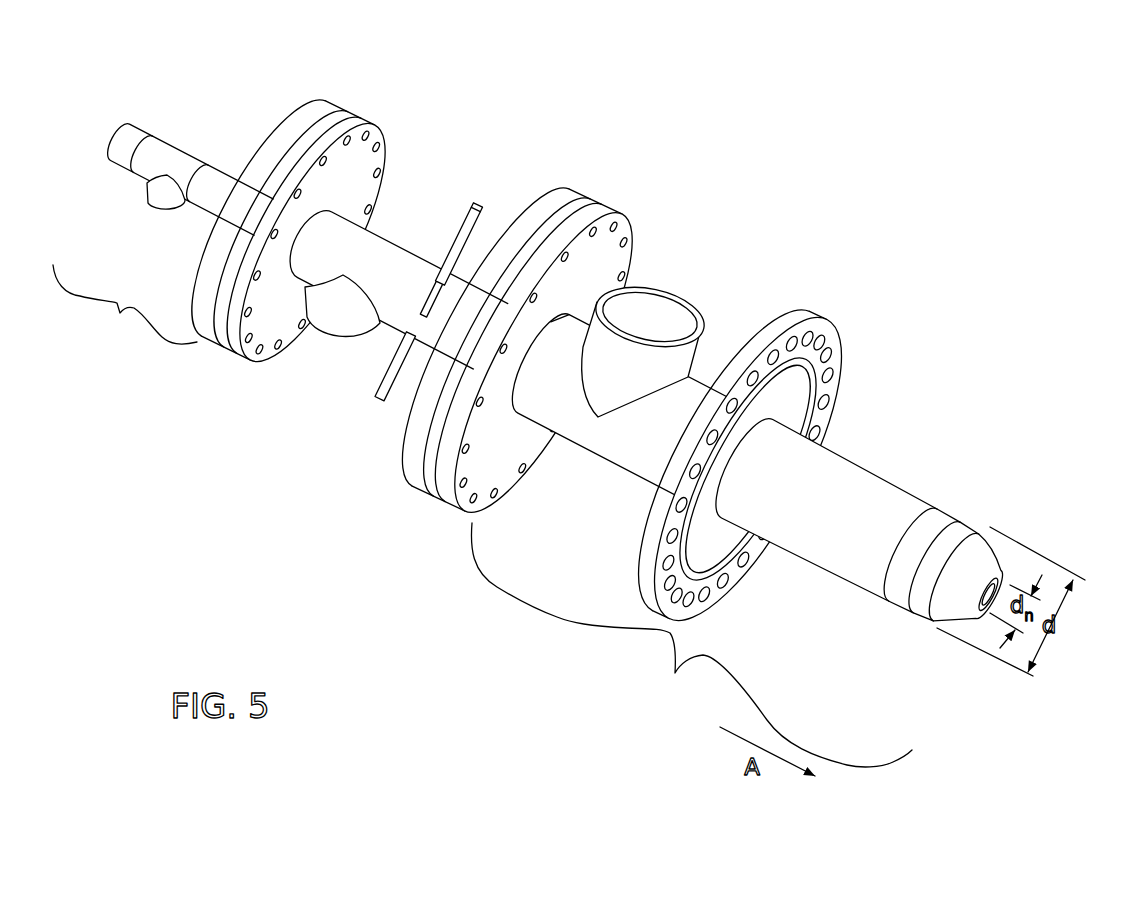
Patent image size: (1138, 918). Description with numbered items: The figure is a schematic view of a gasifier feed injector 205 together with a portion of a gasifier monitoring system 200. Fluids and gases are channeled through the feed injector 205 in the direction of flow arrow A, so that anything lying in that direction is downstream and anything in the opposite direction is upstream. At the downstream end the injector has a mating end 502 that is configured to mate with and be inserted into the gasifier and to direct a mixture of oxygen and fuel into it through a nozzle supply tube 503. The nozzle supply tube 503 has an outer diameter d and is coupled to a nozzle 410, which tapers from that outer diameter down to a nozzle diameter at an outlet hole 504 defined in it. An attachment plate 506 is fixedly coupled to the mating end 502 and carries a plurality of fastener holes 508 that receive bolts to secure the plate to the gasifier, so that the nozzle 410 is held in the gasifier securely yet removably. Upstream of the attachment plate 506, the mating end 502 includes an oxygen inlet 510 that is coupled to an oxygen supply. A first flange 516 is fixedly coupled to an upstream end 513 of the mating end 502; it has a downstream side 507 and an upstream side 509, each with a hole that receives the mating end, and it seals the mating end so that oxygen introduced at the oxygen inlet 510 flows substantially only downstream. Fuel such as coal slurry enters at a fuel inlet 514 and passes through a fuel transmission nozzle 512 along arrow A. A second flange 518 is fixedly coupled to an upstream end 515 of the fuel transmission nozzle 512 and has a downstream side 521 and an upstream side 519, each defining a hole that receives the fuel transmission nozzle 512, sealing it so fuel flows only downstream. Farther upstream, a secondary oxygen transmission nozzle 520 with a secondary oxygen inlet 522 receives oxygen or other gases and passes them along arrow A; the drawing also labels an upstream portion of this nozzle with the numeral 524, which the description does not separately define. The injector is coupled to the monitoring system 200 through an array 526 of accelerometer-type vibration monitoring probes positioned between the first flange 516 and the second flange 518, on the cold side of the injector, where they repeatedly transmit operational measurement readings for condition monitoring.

The gasifier monitoring system 200 is at (436, 142).
The gasifier feed injector 205 is at (728, 182).
The nozzle 410 is at (973, 557).
The mating end 502 is at (691, 645).
The nozzle supply tube 503 is at (847, 487).
The outlet hole 504 is at (1013, 563).
The attachment plate 506 is at (783, 318).
The downstream side 507 is at (617, 267).
The fastener holes 508 is at (820, 338).
The upstream side 509 is at (410, 450).
The oxygen inlet 510 is at (665, 322).
The fuel transmission nozzle 512 is at (385, 250).
The upstream end 513 is at (553, 323).
The fuel inlet 514 is at (333, 320).
The upstream end 515 is at (320, 213).
The first flange 516 is at (561, 192).
The second flange 518 is at (352, 117).
The upstream side 519 is at (296, 119).
The secondary oxygen transmission nozzle 520 is at (125, 304).
The downstream side 521 is at (377, 153).
The secondary oxygen inlet 522 is at (152, 188).
The inlet pipe 524 is at (126, 137).
The array 526 is at (450, 181).